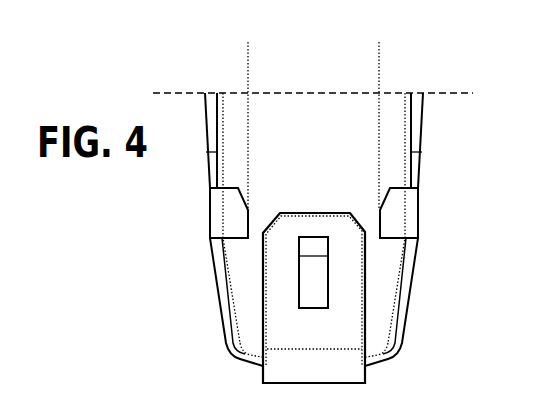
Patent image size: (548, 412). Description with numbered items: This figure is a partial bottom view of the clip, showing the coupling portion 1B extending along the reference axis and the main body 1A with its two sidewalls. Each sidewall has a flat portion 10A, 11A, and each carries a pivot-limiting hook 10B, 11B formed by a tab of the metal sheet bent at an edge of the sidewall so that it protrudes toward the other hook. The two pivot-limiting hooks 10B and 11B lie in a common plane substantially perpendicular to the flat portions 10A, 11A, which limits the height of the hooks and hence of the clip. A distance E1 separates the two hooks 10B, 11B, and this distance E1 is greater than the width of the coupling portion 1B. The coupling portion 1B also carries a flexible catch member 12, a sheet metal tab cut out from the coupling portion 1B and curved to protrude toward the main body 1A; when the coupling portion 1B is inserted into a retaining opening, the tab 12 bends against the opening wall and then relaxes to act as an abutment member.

The main body 1A is at (392, 140).
The coupling portion 1B is at (343, 314).
The flat portion of sidewall 10A is at (222, 292).
The pivot-limiting hook 10B is at (236, 221).
The flat portion of sidewall 11A is at (405, 288).
The pivot-limiting hook 11B is at (392, 220).
The flexible catch member 12 is at (313, 283).
The distance between pivot-limiting hooks E1 is at (378, 52).